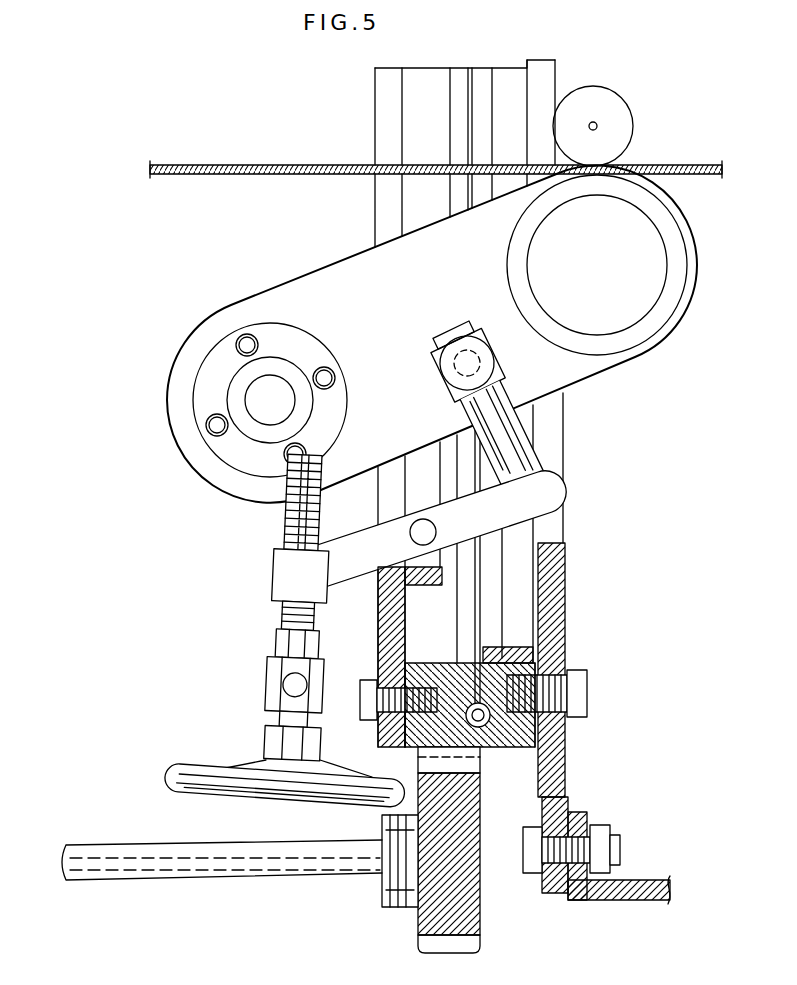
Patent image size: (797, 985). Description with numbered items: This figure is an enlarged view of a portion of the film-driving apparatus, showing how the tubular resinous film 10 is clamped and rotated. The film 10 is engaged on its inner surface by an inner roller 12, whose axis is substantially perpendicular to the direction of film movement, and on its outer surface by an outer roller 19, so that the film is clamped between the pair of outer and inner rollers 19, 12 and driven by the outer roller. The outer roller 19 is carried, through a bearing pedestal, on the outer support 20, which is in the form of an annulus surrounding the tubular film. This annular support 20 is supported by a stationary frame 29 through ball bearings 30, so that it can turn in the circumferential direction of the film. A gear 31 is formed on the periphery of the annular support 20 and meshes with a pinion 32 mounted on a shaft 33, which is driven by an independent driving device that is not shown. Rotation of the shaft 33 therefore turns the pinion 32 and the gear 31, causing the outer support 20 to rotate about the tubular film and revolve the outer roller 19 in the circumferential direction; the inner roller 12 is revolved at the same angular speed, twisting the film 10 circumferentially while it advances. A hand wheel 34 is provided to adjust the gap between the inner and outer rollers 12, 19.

The tubular resinous film 10 is at (287, 164).
The inner roller 12 is at (607, 102).
The outer roller 19 is at (636, 338).
The outer support 20 is at (455, 690).
The stationary frame 29 is at (565, 567).
The ball bearing 30 is at (525, 735).
The gear 31 is at (470, 760).
The pinion 32 is at (477, 947).
The shaft 33 is at (285, 872).
The hand wheel 34 is at (175, 772).